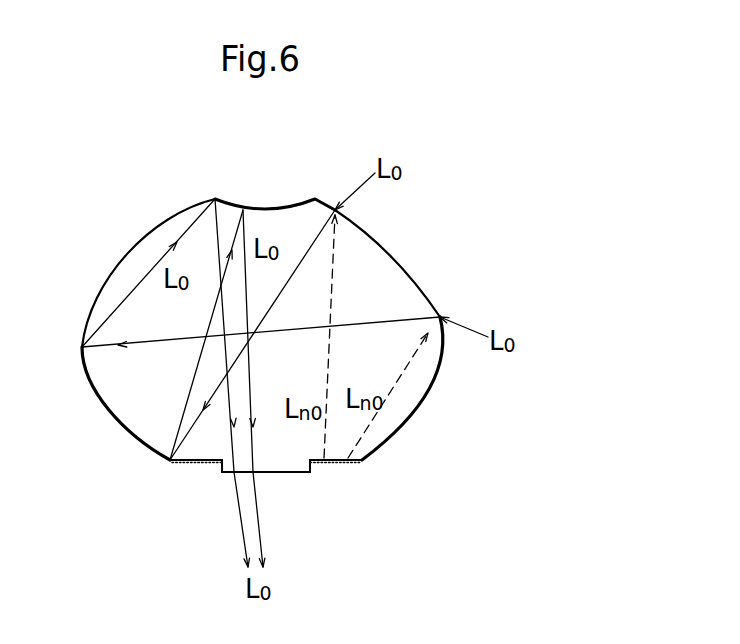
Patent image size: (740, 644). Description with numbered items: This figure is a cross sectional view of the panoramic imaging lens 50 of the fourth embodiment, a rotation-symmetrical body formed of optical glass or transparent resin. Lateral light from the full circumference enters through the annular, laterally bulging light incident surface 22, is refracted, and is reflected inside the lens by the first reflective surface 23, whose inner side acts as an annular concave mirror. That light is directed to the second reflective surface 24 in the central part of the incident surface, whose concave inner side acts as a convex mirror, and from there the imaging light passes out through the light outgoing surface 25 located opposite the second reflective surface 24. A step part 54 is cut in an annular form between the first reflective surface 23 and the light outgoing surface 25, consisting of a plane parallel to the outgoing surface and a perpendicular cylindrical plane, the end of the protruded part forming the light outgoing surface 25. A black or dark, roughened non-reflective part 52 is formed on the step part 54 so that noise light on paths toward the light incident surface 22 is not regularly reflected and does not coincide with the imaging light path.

The panoramic imaging lens 50 is at (292, 341).
The light incident surface 22 is at (425, 277).
The first reflective surface 23 is at (428, 395).
The second reflective surface 24 is at (273, 208).
The light outgoing surface 25 is at (277, 472).
The non-reflective part 52 is at (197, 455).
The step part 54 is at (313, 465).